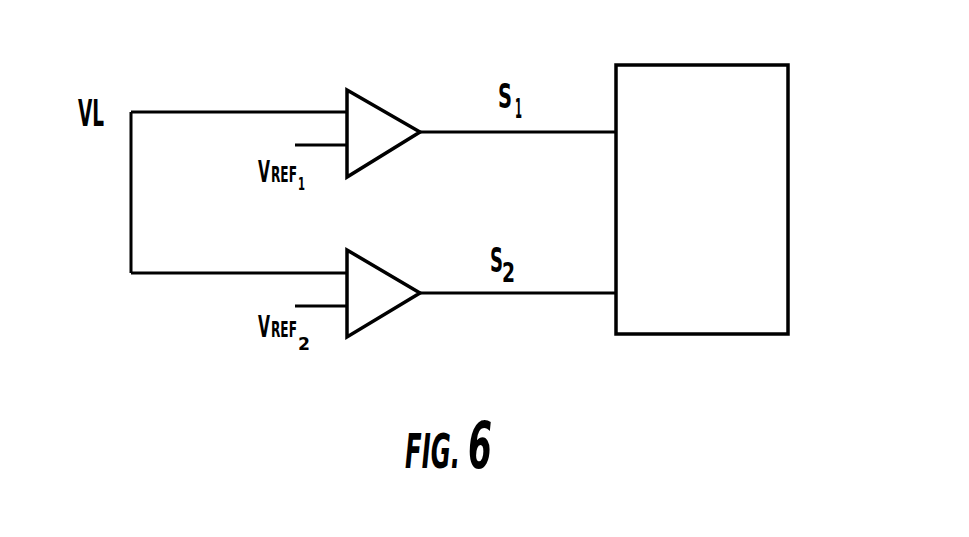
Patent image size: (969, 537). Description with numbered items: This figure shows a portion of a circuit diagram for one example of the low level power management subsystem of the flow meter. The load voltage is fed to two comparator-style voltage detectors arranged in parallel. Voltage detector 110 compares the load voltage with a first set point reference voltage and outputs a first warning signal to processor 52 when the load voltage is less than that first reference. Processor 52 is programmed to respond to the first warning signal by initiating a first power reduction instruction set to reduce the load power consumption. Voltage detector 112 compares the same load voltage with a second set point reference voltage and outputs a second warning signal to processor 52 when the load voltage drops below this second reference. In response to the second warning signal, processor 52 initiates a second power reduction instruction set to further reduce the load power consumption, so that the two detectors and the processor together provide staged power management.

The voltage detector 110 is at (377, 98).
The voltage detector 112 is at (387, 272).
The processor 52 is at (678, 65).